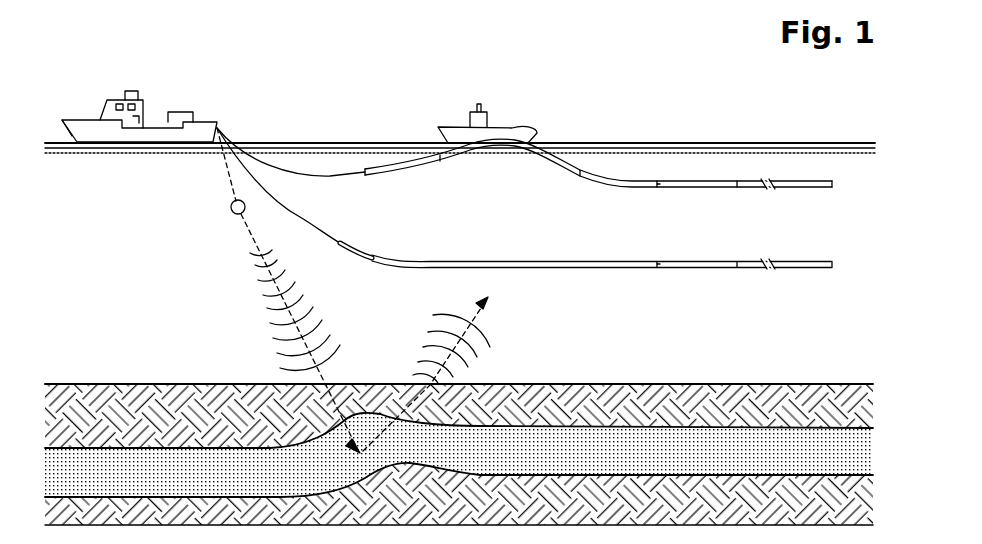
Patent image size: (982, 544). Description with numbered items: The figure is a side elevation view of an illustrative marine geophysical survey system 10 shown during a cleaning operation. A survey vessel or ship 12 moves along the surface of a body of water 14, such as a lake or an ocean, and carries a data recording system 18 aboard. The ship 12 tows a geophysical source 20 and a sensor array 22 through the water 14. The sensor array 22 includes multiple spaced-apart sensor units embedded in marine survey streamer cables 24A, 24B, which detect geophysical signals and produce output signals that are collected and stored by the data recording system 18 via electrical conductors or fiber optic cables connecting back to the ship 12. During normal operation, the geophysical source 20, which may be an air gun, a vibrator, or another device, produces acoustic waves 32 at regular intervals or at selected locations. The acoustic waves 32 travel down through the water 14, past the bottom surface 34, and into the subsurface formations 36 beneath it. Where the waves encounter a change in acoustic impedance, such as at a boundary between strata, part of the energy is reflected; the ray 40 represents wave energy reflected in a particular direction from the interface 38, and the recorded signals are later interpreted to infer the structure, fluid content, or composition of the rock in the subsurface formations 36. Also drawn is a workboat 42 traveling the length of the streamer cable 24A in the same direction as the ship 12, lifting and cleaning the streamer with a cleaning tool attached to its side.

The marine geophysical survey system 10 is at (713, 89).
The survey vessel 12 is at (100, 117).
The body of water 14 is at (96, 277).
The data recording system 18 is at (182, 112).
The geophysical source 20 is at (231, 210).
The sensor array 22 is at (724, 244).
The marine survey streamer cable 24A is at (413, 168).
The marine survey streamer cable 24B is at (368, 250).
The acoustic waves 32 is at (257, 315).
The bottom surface 34 is at (750, 382).
The subsurface formations 36 is at (134, 429).
The interface 38 is at (275, 496).
The ray 40 is at (500, 336).
The workboat 42 is at (521, 127).